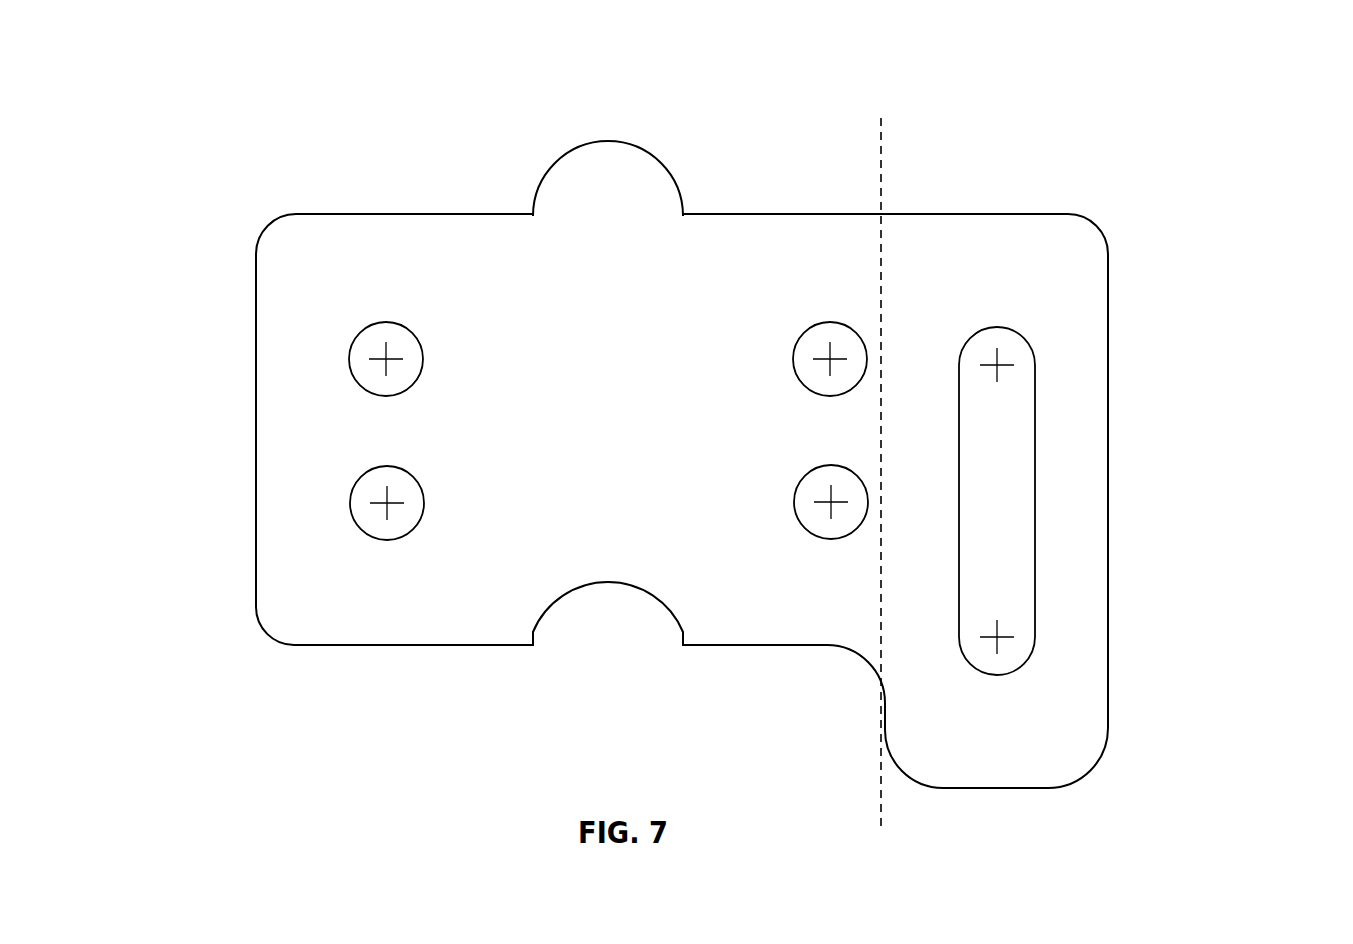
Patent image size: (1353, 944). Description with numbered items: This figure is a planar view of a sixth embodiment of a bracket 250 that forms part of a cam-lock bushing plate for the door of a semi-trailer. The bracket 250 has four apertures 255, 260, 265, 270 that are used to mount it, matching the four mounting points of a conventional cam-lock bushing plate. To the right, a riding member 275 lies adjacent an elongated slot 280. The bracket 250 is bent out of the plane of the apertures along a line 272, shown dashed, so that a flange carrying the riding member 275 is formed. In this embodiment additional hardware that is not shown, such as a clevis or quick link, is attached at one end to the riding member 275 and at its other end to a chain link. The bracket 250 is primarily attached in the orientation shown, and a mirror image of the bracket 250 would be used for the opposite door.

The bracket 250 is at (206, 566).
The aperture 255 is at (372, 503).
The aperture 260 is at (370, 358).
The aperture 265 is at (843, 343).
The aperture 270 is at (832, 528).
The line 272 is at (885, 810).
The riding member 275 is at (1071, 641).
The elongated slot 280 is at (1005, 380).